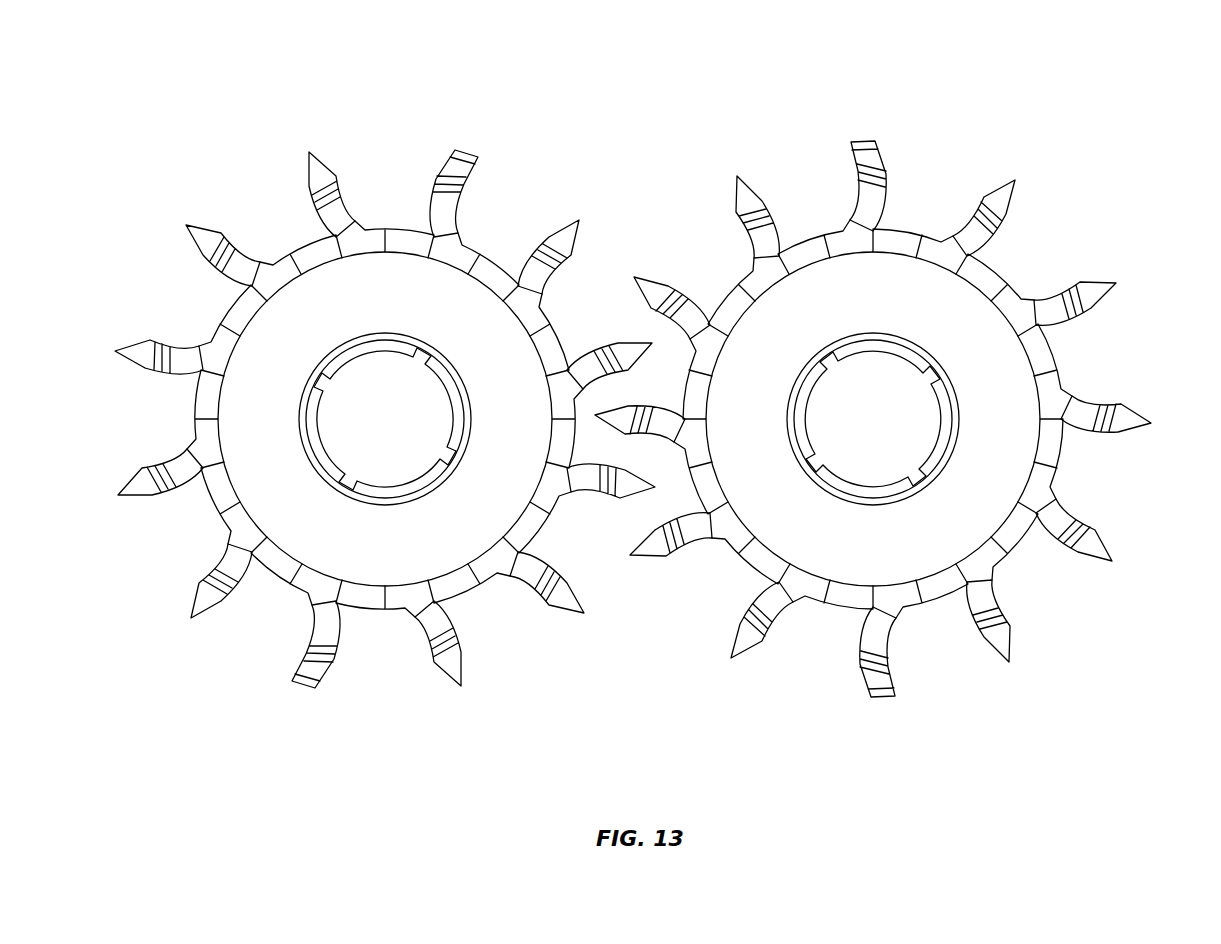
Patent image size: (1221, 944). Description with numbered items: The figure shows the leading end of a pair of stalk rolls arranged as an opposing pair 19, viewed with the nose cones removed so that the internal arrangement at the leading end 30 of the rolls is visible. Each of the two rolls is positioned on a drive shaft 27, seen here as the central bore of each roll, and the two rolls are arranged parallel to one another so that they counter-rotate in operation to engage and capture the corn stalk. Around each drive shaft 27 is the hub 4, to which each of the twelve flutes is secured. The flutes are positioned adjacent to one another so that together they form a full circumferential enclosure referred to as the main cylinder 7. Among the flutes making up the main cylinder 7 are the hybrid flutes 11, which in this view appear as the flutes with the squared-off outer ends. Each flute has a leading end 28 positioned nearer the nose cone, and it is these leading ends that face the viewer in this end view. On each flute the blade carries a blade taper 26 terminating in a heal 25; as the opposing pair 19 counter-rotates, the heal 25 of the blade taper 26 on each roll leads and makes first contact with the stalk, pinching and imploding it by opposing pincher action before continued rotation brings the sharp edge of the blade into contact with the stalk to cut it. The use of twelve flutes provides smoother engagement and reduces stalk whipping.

The opposing pair 19 is at (704, 108).
The hub 4 is at (270, 348).
The main cylinder 7 is at (214, 500).
The hybrid flutes 11 is at (470, 170).
The heal 25 is at (320, 162).
The blade taper 26 is at (208, 235).
The drive shafts 27 is at (397, 458).
The leading end 28 is at (852, 605).
The leading end 30 is at (432, 297).